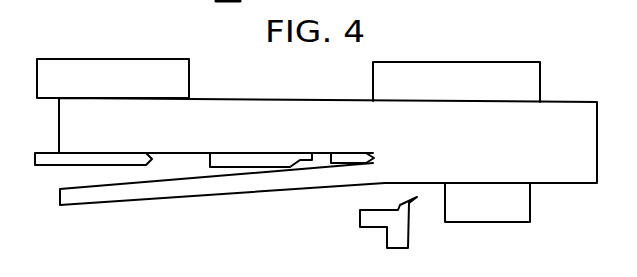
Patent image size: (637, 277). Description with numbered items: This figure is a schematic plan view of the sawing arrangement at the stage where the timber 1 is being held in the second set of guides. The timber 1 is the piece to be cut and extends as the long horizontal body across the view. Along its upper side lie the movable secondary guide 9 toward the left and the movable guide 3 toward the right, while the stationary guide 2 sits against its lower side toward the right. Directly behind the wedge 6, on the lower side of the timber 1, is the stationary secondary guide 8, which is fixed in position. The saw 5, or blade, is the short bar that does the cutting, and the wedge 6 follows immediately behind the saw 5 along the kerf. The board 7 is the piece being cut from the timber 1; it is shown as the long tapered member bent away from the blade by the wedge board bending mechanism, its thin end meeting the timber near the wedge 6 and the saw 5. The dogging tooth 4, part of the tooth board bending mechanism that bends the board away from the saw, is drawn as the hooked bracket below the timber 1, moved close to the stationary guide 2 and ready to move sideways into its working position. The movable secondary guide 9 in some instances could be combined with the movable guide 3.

The timber 1 is at (603, 142).
The stationary guide 2 is at (508, 228).
The movable guide 3 is at (500, 62).
The dogging tooth 4 is at (413, 213).
The saw 5 is at (363, 150).
The wedge 6 is at (270, 150).
The board 7 is at (147, 206).
The stationary secondary guide 8 is at (143, 148).
The movable secondary guide 9 is at (131, 55).